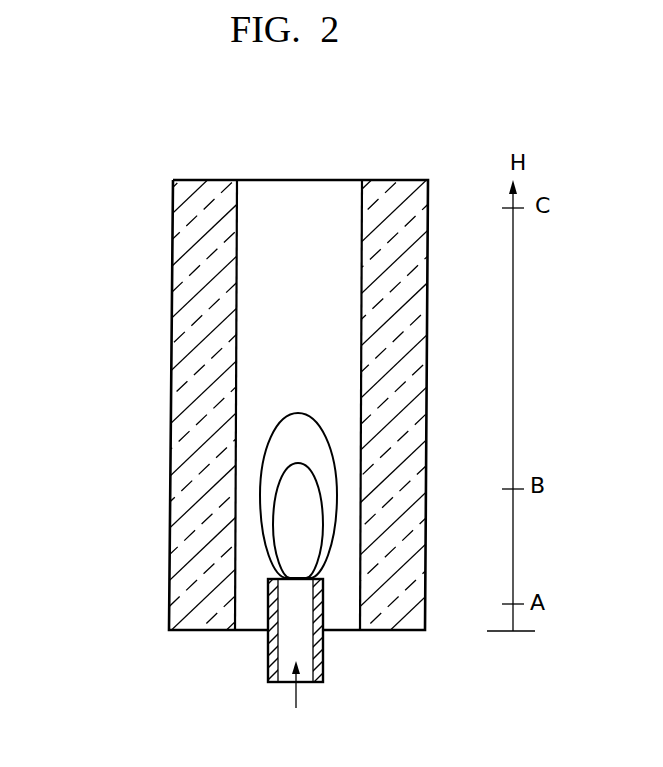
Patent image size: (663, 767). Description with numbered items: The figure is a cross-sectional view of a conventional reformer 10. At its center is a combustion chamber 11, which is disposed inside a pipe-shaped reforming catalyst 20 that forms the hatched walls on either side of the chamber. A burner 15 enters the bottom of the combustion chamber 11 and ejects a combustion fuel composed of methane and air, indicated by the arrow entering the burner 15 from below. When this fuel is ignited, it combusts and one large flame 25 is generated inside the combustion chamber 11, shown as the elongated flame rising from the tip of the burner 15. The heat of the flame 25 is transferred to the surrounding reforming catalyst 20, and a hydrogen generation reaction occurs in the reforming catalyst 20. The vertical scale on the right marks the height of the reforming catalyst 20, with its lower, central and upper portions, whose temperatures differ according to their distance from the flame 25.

The conventional reformer 10 is at (110, 183).
The combustion chamber 11 is at (306, 190).
The burner 15 is at (323, 656).
The reforming catalyst 20 is at (397, 192).
The flame 25 is at (268, 477).